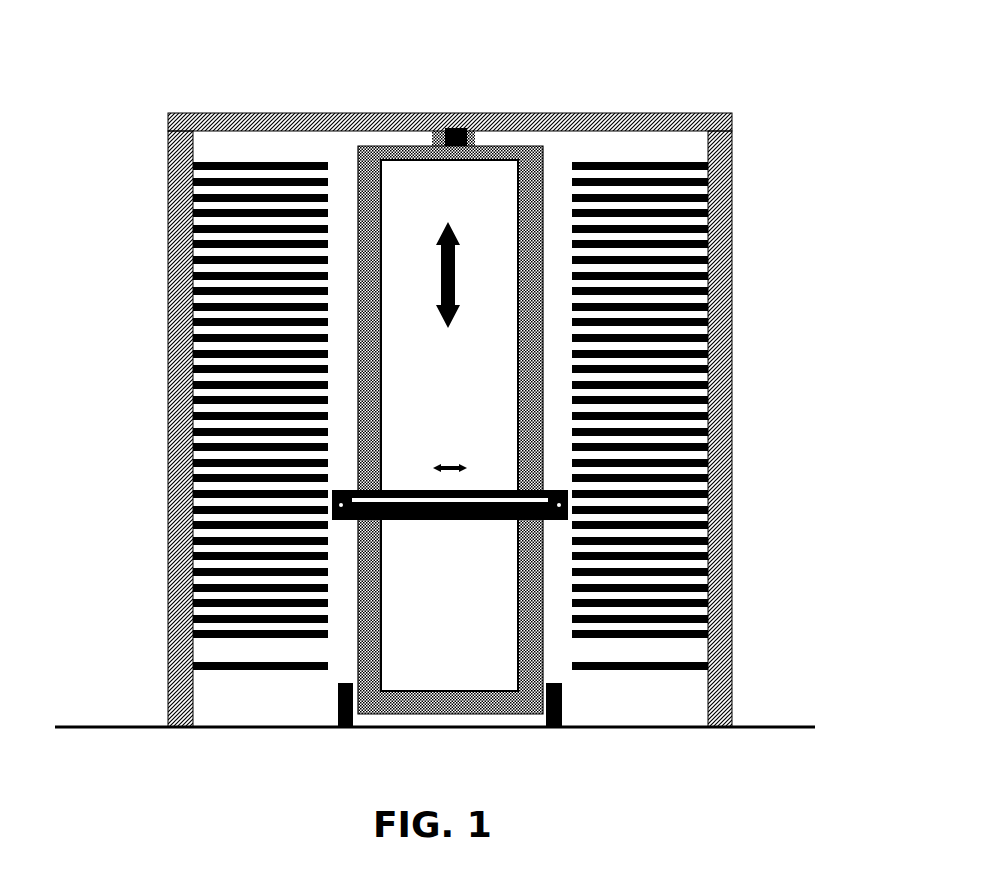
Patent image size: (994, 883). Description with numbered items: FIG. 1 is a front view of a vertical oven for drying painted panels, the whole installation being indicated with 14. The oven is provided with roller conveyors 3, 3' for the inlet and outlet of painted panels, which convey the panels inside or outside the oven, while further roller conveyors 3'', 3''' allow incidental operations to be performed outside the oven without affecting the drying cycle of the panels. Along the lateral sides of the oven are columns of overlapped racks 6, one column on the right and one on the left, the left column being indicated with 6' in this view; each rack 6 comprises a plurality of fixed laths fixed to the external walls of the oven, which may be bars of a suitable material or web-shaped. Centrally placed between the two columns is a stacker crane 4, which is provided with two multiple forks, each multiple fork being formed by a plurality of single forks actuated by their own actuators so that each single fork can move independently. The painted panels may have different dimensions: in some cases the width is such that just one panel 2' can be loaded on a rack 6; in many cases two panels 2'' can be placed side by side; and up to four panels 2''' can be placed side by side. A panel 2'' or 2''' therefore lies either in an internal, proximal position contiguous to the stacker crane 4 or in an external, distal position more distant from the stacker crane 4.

The heat exchanger assembly 14 is at (167, 98).
The left fin package 6' is at (260, 352).
The rack 6 is at (643, 352).
The painted panels placed side by side 2''' is at (691, 159).
The painted panel 2' is at (679, 261).
The painted panels placed side by side 2'' is at (684, 353).
The roller conveyor 3 is at (213, 659).
The roller conveyor 3'' is at (220, 693).
The roller conveyor 3' is at (685, 604).
The roller conveyor 3''' is at (691, 687).
The stacker crane 4 is at (457, 635).